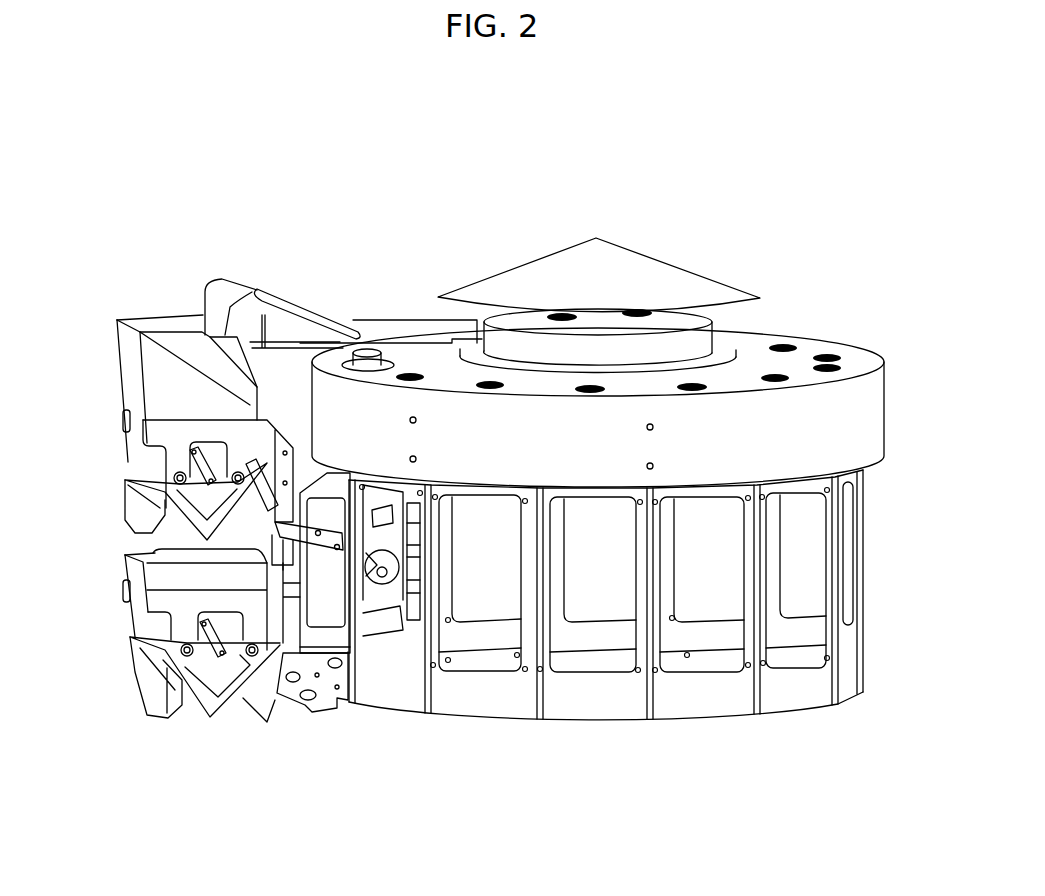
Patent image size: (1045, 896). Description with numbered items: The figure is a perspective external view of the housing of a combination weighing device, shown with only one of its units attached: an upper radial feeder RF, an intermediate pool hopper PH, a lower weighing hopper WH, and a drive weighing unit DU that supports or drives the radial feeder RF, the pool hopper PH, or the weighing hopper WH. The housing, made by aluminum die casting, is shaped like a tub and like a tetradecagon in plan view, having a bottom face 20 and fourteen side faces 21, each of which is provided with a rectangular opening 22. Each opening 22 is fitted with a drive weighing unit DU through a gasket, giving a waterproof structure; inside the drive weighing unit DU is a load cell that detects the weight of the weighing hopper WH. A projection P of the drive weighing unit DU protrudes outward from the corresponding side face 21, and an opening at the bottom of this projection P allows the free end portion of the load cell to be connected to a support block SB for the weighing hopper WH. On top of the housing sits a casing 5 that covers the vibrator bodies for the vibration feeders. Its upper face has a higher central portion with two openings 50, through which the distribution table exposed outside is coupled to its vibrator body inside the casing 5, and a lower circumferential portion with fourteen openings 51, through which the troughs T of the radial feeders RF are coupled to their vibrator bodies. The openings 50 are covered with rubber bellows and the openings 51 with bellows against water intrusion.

The casing 5 is at (853, 412).
The bottom face 20 is at (597, 662).
The side faces 21 is at (880, 566).
The rectangular opening 22 is at (817, 585).
The openings 50 is at (637, 310).
The openings 51 is at (490, 383).
The trough T is at (272, 296).
The radial feeder RF is at (373, 293).
The pool hopper PH is at (130, 389).
The weighing hopper WH is at (136, 603).
The projection P is at (320, 625).
The support block SB is at (327, 700).
The drive weighing unit DU is at (337, 545).